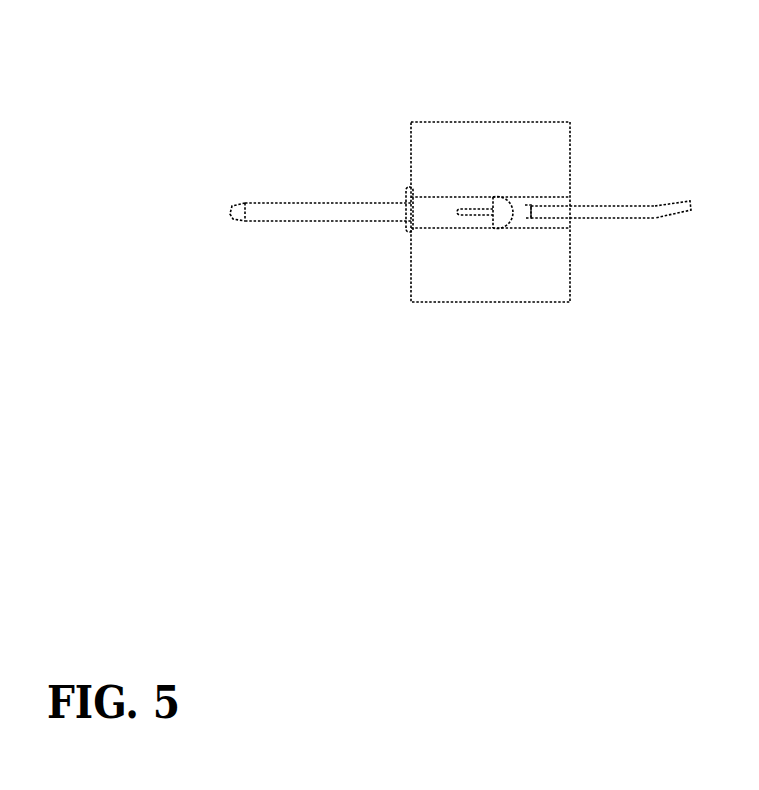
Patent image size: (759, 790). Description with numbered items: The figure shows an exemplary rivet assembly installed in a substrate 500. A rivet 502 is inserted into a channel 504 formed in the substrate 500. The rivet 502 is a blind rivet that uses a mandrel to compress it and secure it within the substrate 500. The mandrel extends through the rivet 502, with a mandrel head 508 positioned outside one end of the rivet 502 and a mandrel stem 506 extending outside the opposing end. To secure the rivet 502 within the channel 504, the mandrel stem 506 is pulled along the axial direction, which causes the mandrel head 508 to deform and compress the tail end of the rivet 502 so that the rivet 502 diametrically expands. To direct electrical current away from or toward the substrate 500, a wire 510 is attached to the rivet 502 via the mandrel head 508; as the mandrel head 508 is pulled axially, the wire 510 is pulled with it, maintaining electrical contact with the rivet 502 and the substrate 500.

The substrate 500 is at (447, 110).
The rivet 502 is at (433, 231).
The channel 504 is at (580, 204).
The mandrel stem 506 is at (258, 203).
The mandrel head 508 is at (502, 229).
The wire 510 is at (653, 207).